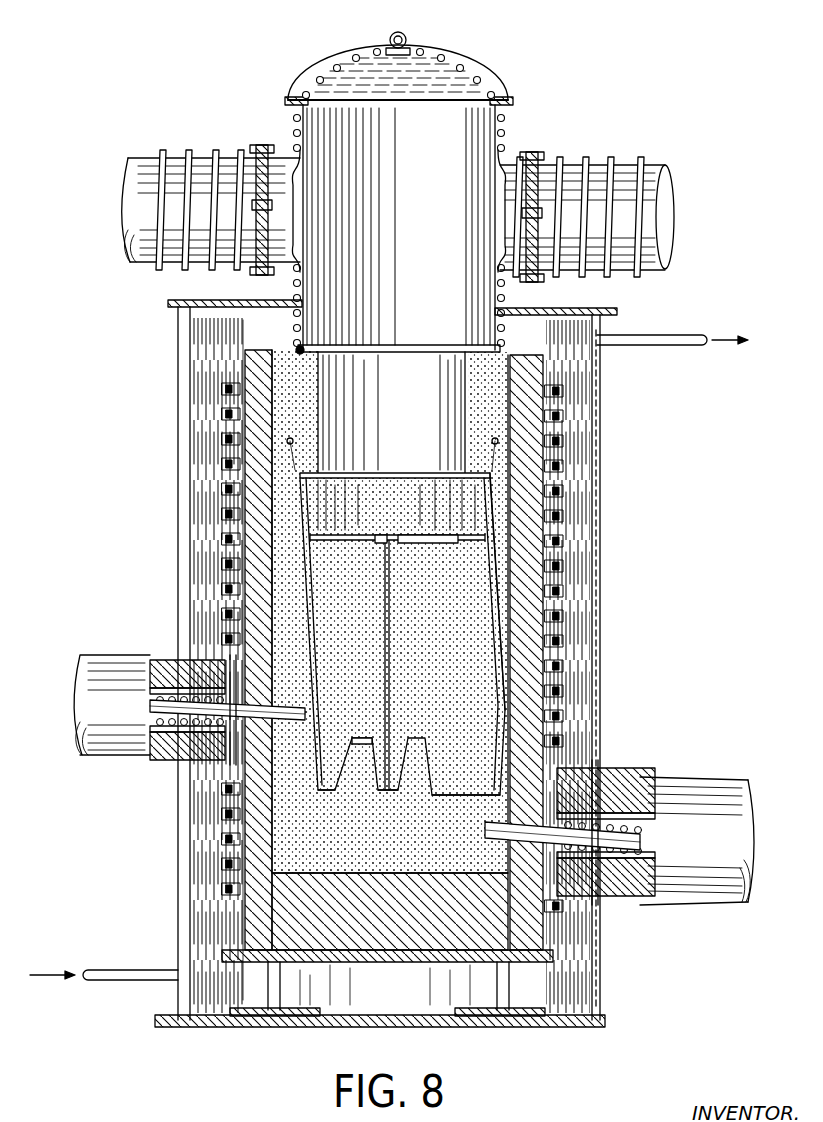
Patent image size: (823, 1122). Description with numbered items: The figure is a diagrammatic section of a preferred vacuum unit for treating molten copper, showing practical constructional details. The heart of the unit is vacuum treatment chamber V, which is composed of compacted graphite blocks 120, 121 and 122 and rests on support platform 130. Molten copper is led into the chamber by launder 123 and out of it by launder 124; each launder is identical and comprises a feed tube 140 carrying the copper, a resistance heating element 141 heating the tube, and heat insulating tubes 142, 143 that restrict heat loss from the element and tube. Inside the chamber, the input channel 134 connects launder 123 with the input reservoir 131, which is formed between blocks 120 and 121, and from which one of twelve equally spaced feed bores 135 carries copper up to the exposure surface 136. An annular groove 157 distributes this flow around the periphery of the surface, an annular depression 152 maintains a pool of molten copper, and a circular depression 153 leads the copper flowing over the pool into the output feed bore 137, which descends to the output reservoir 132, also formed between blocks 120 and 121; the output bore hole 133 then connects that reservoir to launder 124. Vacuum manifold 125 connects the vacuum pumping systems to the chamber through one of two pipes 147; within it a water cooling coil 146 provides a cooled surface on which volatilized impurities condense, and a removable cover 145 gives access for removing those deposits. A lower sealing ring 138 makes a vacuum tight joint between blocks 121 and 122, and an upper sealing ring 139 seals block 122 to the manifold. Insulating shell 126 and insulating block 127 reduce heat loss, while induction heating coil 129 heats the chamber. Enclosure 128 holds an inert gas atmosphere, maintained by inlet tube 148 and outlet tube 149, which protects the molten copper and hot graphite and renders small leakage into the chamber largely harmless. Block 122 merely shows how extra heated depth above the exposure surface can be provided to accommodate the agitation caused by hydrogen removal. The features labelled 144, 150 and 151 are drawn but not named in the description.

The block 120 is at (285, 852).
The block 121 is at (280, 577).
The block 122 is at (292, 380).
The launder 123 is at (112, 662).
The launder 124 is at (682, 780).
The vacuum manifold 125 is at (475, 140).
The insulating shell 126 is at (545, 372).
The insulating block 127 is at (480, 938).
The enclosure 128 is at (597, 575).
The induction heating coil 129 is at (563, 518).
The support platform 130 is at (555, 958).
The input reservoir 131 is at (312, 780).
The output reservoir 132 is at (374, 786).
The output bore hole 133 is at (455, 800).
The input channel 134 is at (292, 710).
The feed bore 135 is at (310, 618).
The exposure surface 136 is at (355, 530).
The output feed bore 137 is at (390, 618).
The lower sealing ring 138 is at (294, 441).
The upper sealing ring 139 is at (304, 348).
The feed tube 140 is at (232, 736).
The resistance heating element 141 is at (172, 728).
The heat insulating tube 142 is at (158, 670).
The heat insulating tube 143 is at (190, 750).
The spacer plate 144 is at (196, 666).
The removable cover 145 is at (367, 60).
The water cooling coil 146 is at (460, 66).
The pipe 147 is at (594, 180).
The inlet tube 148 is at (108, 982).
The outlet tube 149 is at (656, 336).
The inner cylinder 150 is at (391, 412).
The ridge 151 is at (362, 740).
The annular depression 152 is at (430, 534).
The circular depression 153 is at (383, 532).
The annular groove 157 is at (480, 520).
The vacuum treatment chamber V is at (510, 620).